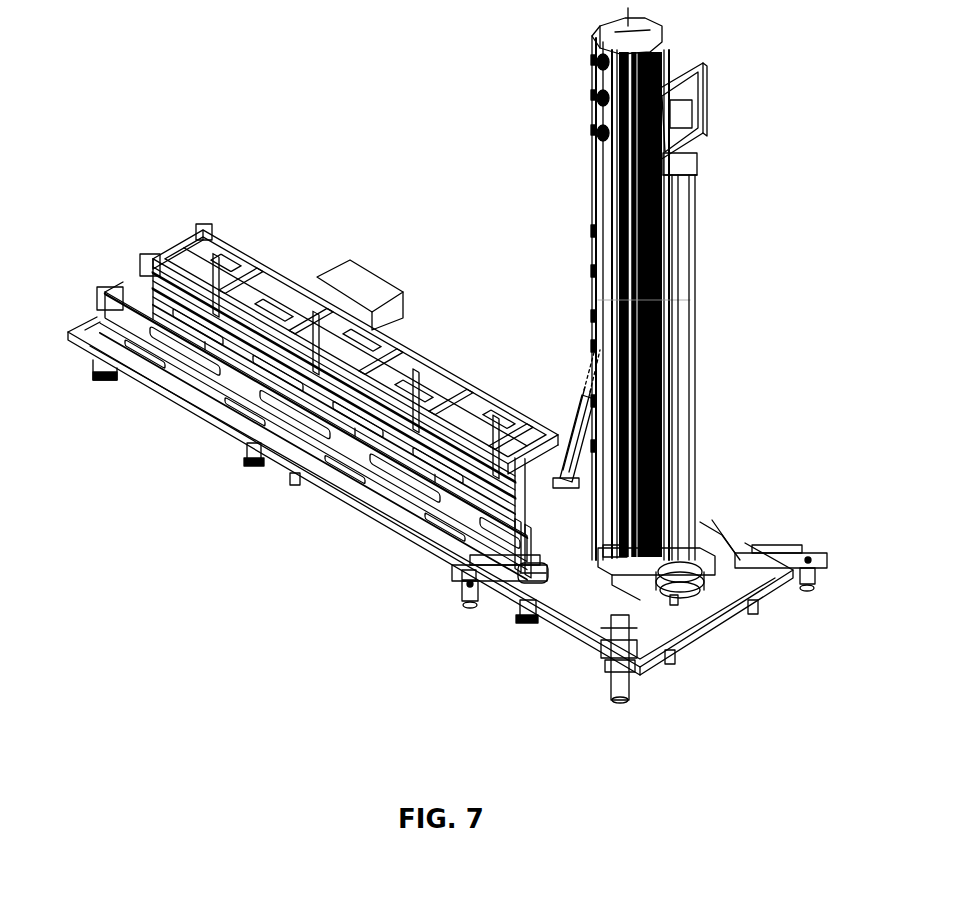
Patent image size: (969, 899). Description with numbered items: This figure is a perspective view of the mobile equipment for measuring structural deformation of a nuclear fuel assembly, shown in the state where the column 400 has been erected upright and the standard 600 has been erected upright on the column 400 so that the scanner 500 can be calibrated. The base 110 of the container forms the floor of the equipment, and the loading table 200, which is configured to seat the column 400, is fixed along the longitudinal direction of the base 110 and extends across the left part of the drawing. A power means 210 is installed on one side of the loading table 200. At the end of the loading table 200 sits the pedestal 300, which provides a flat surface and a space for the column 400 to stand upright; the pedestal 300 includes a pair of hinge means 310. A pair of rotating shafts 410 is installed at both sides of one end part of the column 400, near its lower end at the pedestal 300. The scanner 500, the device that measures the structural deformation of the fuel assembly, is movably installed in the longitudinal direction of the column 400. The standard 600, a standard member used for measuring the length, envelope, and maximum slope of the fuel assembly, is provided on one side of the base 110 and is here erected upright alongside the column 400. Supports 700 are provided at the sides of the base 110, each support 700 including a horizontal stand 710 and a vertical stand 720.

The base 110 is at (445, 532).
The loading table 200 is at (238, 240).
The power means 210 is at (572, 392).
The pedestal 300 is at (665, 590).
The hinge means 310 is at (520, 565).
The column 400 is at (597, 108).
The rotating shafts 410 is at (552, 590).
The scanner 500 is at (712, 522).
The standard 600 is at (690, 240).
The supports 700 is at (448, 653).
The horizontal stand 710 is at (507, 598).
The vertical stand 720 is at (478, 595).